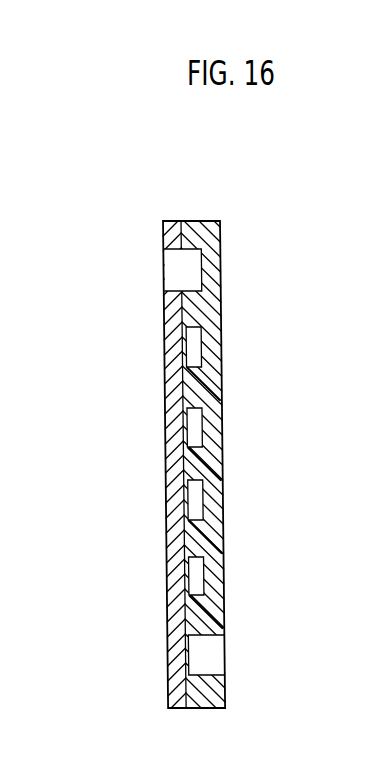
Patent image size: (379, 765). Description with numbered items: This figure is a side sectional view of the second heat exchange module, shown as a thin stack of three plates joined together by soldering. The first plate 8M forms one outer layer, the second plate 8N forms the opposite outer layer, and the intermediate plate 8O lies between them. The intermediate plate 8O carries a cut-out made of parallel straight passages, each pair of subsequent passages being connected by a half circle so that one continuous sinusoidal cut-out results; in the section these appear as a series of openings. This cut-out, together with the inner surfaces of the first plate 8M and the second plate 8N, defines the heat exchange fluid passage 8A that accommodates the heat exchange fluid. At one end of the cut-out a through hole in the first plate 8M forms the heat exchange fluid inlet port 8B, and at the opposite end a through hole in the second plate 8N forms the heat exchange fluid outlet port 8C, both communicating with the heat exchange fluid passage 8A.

The heat exchange fluid passage 8A is at (221, 333).
The heat exchange fluid inlet port 8B is at (175, 271).
The heat exchange fluid outlet port 8C is at (200, 646).
The first plate 8M is at (174, 374).
The second plate 8N is at (221, 466).
The intermediate plate 8O is at (203, 389).